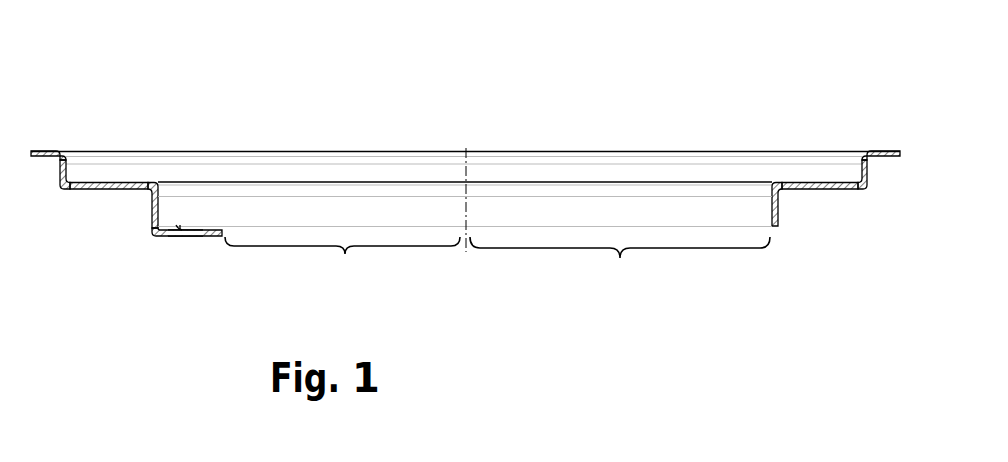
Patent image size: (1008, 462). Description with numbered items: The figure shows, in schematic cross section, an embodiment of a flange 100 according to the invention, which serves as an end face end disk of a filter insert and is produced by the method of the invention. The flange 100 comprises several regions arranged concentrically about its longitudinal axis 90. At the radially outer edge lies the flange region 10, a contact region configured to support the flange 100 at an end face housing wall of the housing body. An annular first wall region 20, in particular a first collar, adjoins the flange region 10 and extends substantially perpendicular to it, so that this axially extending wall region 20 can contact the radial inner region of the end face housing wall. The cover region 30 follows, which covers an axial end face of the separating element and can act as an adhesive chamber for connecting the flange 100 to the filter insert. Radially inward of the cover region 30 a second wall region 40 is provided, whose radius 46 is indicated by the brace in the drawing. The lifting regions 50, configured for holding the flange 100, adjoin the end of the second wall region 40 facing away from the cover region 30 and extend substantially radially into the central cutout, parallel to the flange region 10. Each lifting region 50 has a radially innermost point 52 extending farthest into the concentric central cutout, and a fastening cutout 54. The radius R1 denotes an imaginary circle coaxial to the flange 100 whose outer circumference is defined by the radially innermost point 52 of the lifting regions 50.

The flange 100 is at (160, 66).
The flange region 10 is at (43, 157).
The first wall region 20 is at (70, 160).
The cover region 30 is at (106, 189).
The second wall region 40 is at (160, 207).
The lifting region 50 is at (158, 257).
The radially innermost point of the lifting region 52 is at (228, 232).
The fastening cutout 54 is at (191, 238).
The longitudinal axis 90 is at (466, 152).
The radius of an imaginary circle R1 is at (342, 259).
The radius of the second wall region 46 is at (620, 266).